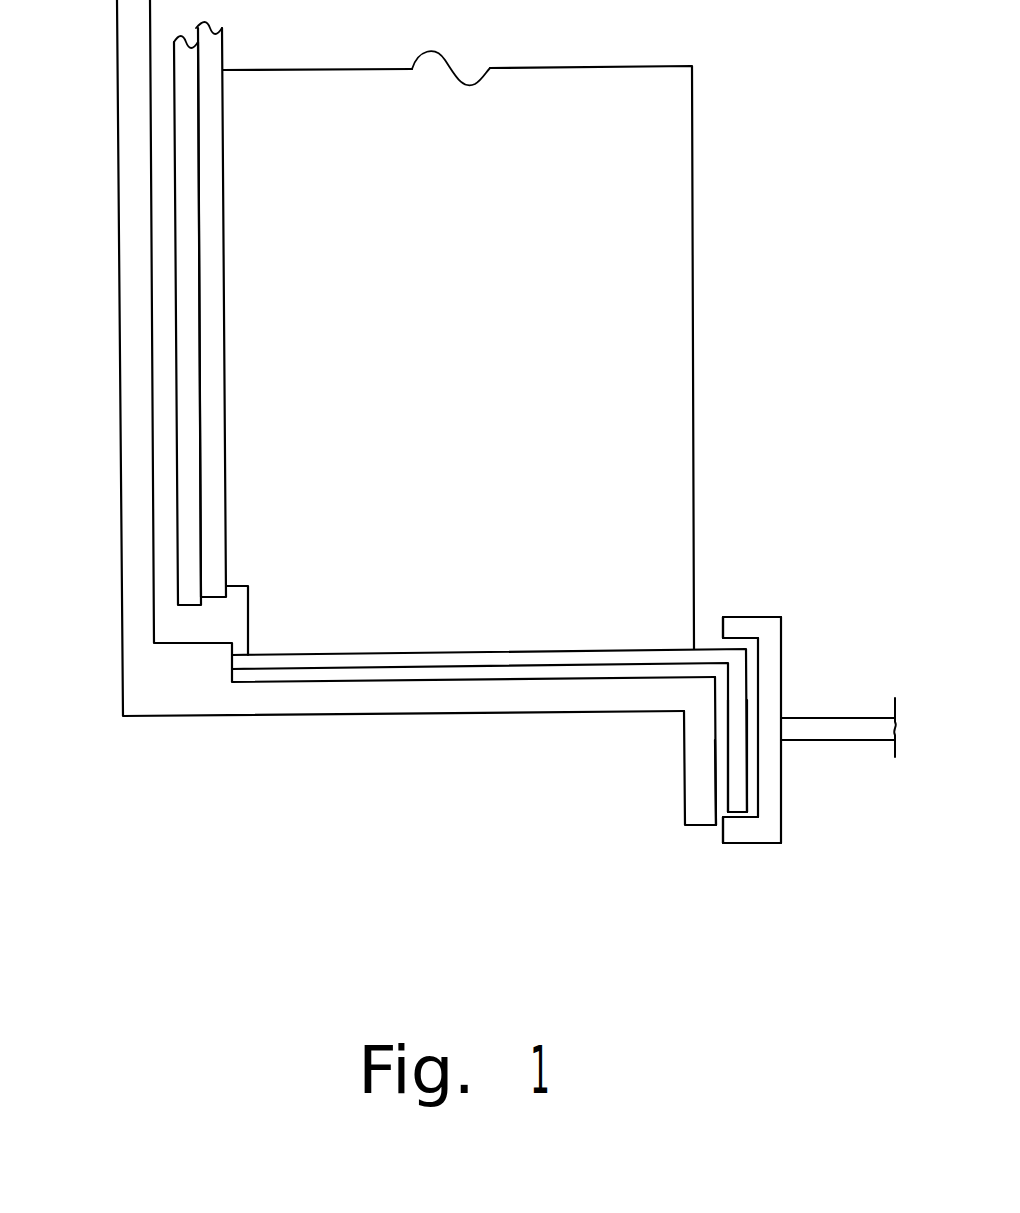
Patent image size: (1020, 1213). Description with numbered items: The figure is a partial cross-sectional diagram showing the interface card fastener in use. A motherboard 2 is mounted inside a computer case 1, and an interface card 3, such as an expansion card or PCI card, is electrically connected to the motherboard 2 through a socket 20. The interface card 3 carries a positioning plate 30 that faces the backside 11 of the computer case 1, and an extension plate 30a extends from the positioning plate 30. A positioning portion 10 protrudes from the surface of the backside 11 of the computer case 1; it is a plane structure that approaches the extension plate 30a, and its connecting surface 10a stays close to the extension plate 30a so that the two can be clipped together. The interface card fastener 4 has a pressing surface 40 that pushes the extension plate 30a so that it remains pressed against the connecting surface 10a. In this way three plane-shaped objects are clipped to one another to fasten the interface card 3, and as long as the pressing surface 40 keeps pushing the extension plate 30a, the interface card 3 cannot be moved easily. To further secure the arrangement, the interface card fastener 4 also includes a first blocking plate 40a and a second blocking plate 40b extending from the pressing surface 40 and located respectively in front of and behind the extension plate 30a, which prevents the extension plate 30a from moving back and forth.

The computer case 1 is at (113, 675).
The motherboard 2 is at (190, 265).
The interface card 3 is at (617, 212).
The interface card fastener 4 is at (867, 745).
The positioning portion 10 is at (698, 827).
The connecting surface 10a is at (716, 782).
The backside 11 is at (300, 692).
The socket 20 is at (213, 385).
The positioning plate 30 is at (583, 652).
The extension plate 30a is at (737, 740).
The pressing surface 40 is at (760, 683).
The first blocking plate 40a is at (753, 830).
The second blocking plate 40b is at (742, 626).